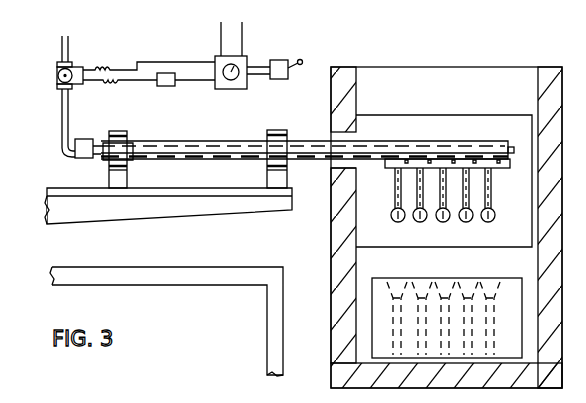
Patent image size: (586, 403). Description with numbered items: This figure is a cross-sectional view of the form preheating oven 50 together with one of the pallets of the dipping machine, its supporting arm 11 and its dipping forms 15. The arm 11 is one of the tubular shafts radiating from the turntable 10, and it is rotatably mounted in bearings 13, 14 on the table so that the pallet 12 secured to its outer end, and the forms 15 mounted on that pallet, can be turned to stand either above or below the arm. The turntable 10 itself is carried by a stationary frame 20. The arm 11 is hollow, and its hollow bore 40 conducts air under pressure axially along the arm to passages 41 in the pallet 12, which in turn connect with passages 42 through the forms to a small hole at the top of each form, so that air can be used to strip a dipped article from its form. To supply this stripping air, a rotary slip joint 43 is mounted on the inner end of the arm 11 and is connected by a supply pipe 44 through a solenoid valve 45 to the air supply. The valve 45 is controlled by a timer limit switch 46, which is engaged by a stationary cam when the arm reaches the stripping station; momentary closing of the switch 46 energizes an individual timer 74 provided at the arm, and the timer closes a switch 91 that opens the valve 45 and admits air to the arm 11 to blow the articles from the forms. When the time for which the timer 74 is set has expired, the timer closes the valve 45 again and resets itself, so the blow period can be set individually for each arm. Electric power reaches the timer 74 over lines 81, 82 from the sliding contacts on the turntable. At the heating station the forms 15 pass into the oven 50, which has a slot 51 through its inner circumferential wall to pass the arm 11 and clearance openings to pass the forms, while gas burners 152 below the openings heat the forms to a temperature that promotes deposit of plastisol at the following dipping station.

The turntable 10 is at (201, 200).
The arm 11 is at (217, 143).
The pallet 12 is at (478, 163).
The bearing 13 is at (276, 130).
The bearing 14 is at (125, 132).
The dipping form 15 is at (400, 222).
The stationary frame 20 is at (200, 293).
The hollow bore 40 is at (171, 143).
The passage 41 is at (395, 174).
The passage 42 is at (390, 214).
The rotary slip joint 43 is at (86, 159).
The supply pipe 44 is at (61, 50).
The solenoid valve 45 is at (57, 76).
The timer limit switch 46 is at (288, 63).
The oven 50 is at (331, 317).
The slot 51 is at (332, 166).
The timer 74 is at (217, 60).
The line 81 is at (219, 34).
The line 82 is at (258, 33).
The switch 91 is at (161, 87).
The burner 152 is at (441, 278).